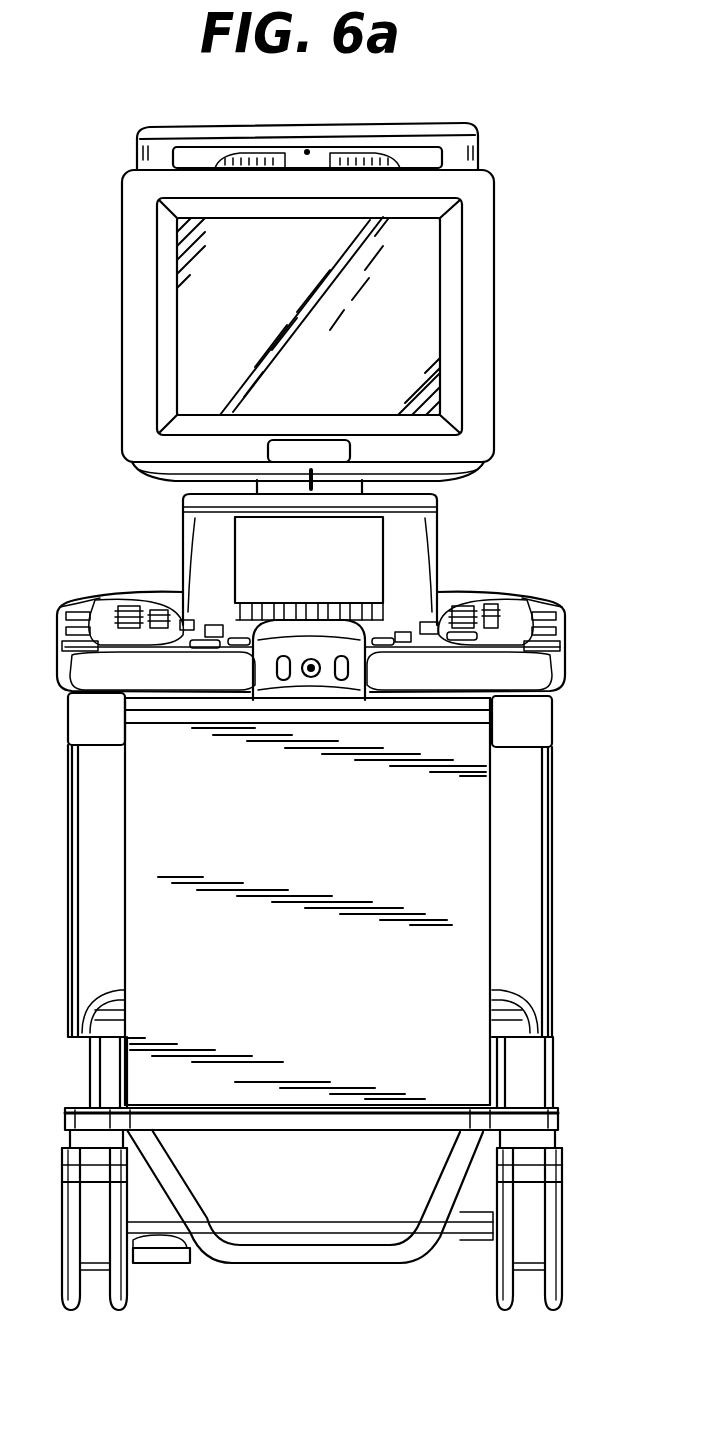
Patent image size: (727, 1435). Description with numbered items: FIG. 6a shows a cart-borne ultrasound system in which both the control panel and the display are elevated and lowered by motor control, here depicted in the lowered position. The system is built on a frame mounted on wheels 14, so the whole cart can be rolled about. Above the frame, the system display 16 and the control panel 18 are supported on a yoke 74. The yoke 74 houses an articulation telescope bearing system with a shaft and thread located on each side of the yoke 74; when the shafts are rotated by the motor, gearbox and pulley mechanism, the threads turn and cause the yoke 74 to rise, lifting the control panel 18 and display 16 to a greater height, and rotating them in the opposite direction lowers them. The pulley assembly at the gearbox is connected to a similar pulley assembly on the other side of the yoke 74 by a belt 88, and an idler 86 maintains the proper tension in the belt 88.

The wheels 14 is at (364, 1006).
The system display 16 is at (485, 270).
The control panel 18 is at (512, 608).
The yoke 74 is at (552, 815).
The idler 86 is at (160, 1243).
The belt 88 is at (473, 1233).